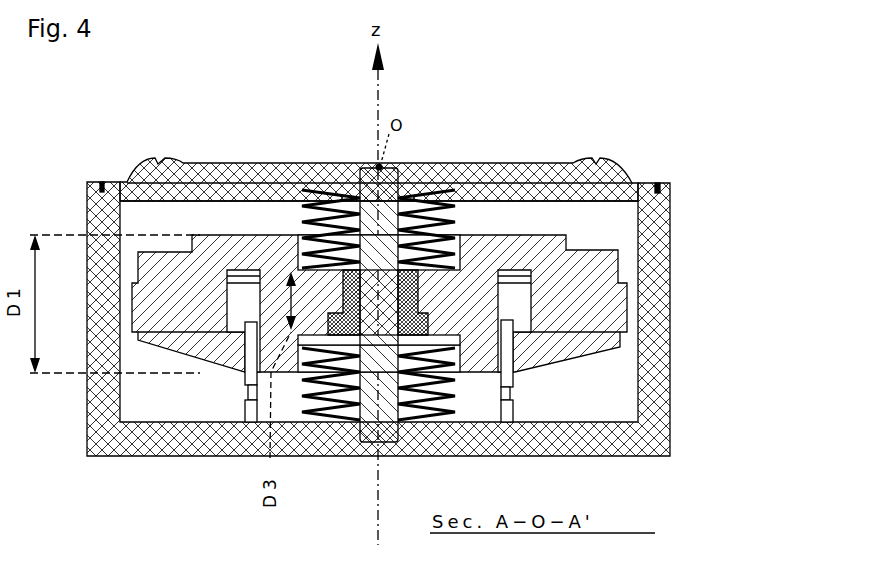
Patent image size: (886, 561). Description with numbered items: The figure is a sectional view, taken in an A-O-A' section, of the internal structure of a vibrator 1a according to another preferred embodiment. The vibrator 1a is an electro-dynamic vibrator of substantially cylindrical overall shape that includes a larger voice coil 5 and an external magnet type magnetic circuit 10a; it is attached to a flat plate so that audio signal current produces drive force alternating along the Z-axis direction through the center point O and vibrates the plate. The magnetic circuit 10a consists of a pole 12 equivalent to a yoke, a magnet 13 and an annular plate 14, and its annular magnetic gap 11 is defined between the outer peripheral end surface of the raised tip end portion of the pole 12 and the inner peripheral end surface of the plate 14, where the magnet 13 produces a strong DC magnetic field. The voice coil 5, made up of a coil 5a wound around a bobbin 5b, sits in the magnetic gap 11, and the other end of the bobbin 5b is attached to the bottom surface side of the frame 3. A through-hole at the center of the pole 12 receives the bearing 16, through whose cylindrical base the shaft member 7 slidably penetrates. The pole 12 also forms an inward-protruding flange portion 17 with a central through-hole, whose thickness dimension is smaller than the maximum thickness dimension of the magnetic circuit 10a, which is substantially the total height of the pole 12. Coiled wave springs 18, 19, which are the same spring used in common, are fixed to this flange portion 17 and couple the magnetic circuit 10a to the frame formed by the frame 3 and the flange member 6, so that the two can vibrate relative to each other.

The vibrator 1a is at (566, 130).
The frame 3 is at (87, 200).
The voice coil 5 is at (325, 422).
The coil 5a is at (243, 376).
The bobbin 5b is at (249, 397).
The flange member 6 is at (233, 173).
The shaft member 7 is at (352, 457).
The external magnet type magnetic circuit 10a is at (765, 440).
The magnetic gap 11 is at (520, 380).
The pole 12 is at (545, 242).
The magnet 13 is at (622, 285).
The plate 14 is at (590, 358).
The bearing 16 is at (518, 385).
The flange portion 17 is at (440, 290).
The coiled wave spring 18 is at (457, 190).
The coiled wave spring 19 is at (452, 410).